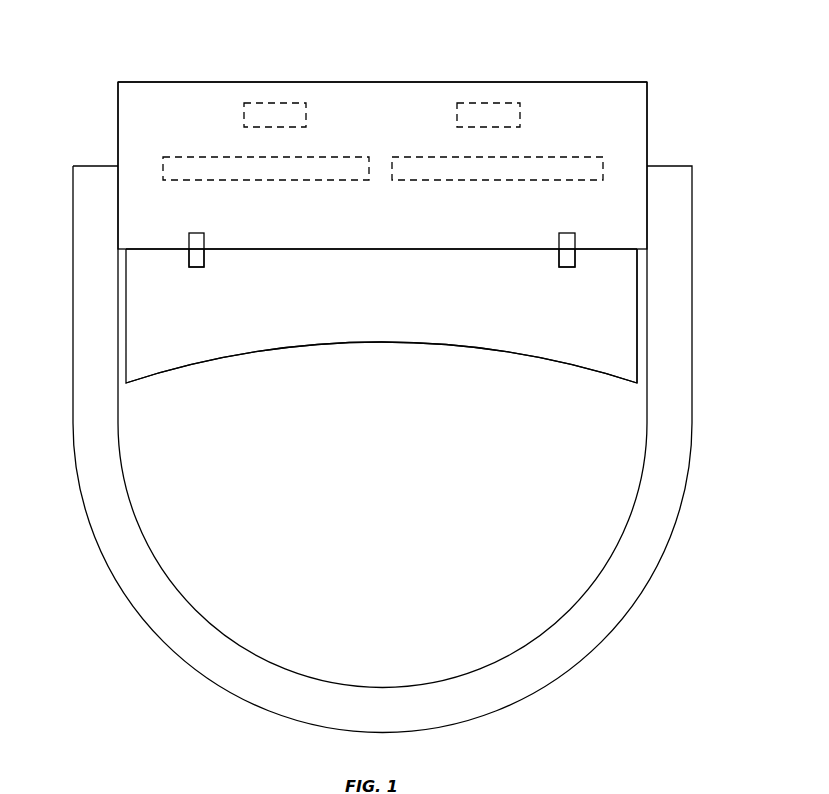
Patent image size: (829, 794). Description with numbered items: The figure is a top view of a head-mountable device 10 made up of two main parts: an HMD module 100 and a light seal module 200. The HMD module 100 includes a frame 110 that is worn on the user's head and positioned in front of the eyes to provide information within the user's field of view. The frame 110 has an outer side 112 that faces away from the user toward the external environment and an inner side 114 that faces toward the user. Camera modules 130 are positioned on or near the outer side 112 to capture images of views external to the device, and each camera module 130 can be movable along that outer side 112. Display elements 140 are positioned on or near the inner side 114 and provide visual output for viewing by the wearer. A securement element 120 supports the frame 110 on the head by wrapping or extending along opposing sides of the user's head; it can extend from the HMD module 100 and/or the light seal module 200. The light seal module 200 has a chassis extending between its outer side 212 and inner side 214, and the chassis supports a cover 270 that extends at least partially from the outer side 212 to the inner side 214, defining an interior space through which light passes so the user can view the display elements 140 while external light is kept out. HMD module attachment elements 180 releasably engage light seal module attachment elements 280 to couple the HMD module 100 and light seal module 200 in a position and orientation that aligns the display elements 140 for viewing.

The head-mountable device 10 is at (114, 0).
The HMD module 100 is at (118, 84).
The frame 110 is at (125, 120).
The outer side 112 is at (627, 82).
The inner side 114 is at (647, 252).
The securement element 120 is at (648, 557).
The camera module 130 is at (280, 102).
The display element 140 is at (338, 157).
The HMD module attachment element 180 is at (204, 243).
The light seal module attachment element 280 is at (204, 258).
The light seal module 200 is at (140, 318).
The outer side 212 is at (133, 249).
The inner side 214 is at (190, 368).
The cover 270 is at (593, 345).